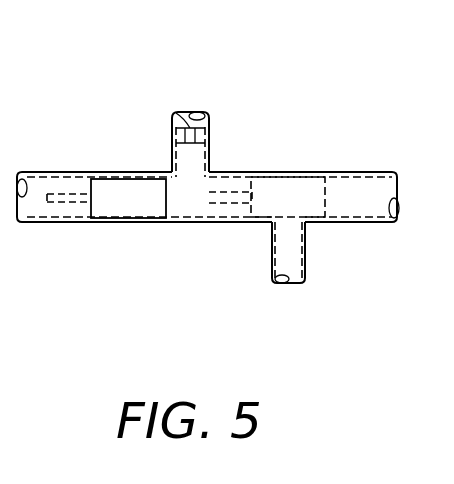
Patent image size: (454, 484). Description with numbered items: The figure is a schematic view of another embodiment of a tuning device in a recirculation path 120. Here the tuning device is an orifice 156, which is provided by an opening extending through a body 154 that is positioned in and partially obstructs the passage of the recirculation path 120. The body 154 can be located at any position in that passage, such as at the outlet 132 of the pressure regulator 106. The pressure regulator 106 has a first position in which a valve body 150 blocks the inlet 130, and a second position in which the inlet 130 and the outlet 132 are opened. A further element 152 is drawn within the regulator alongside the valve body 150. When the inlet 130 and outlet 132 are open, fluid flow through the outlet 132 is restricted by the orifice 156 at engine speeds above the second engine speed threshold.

The pressure regulator 106 is at (197, 248).
The recirculation path 120 is at (197, 98).
The orifice 156 is at (186, 113).
The body 154 is at (207, 117).
The outlet 132 is at (212, 143).
The first valve block 152 is at (122, 190).
The valve body 150 is at (318, 190).
The inlet 130 is at (307, 253).